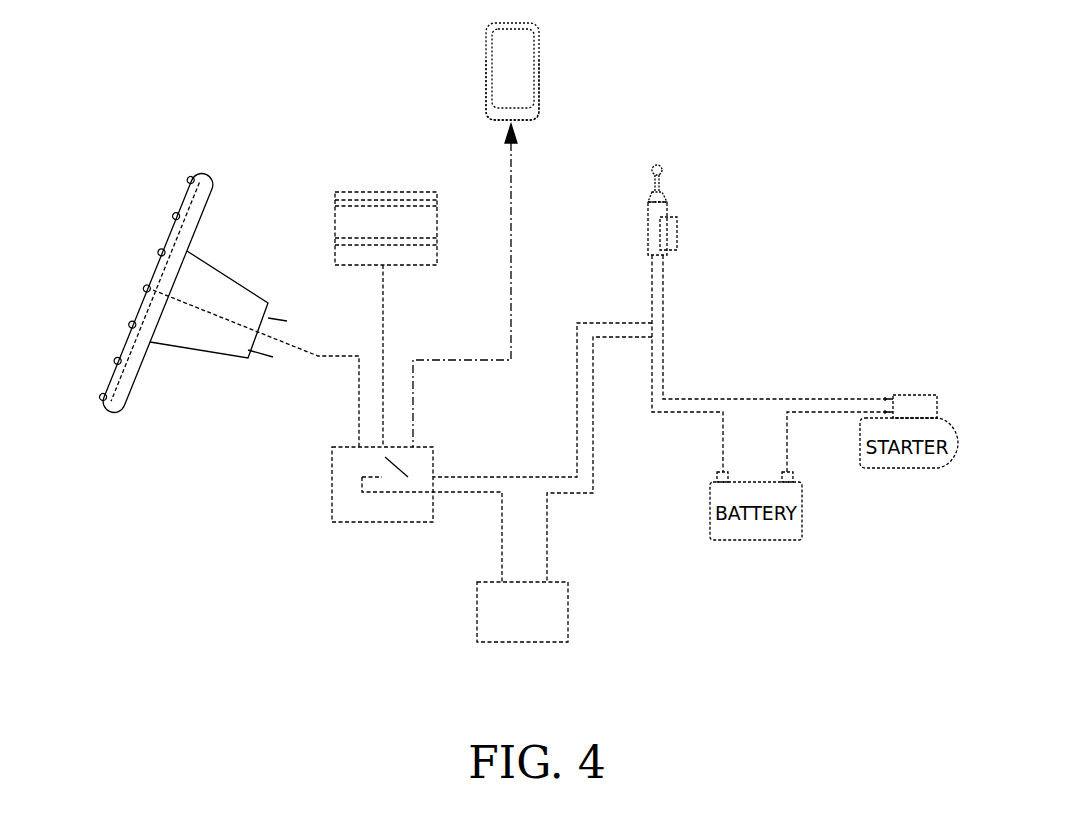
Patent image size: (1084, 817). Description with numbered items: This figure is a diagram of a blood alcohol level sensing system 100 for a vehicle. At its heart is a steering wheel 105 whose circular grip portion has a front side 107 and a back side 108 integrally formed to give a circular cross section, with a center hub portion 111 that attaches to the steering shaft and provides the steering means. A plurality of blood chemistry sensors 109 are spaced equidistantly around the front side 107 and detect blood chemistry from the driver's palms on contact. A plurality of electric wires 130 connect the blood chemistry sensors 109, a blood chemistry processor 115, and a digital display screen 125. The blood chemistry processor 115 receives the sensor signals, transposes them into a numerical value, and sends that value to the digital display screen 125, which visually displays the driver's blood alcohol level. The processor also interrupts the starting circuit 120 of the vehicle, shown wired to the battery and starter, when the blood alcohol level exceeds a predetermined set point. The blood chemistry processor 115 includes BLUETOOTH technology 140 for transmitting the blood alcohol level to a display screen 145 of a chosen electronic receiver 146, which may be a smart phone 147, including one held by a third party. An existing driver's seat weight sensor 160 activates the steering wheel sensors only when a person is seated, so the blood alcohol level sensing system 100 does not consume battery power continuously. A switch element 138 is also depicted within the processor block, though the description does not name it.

The blood alcohol level sensing system 100 is at (266, 77).
The steering wheel 105 is at (205, 173).
The front side 107 is at (159, 266).
The back side 108 is at (141, 383).
The blood chemistry sensors 109 is at (176, 215).
The center hub portion 111 is at (208, 257).
The blood chemistry processor 115 is at (338, 522).
The starting circuit 120 is at (622, 323).
The digital display screen 125 is at (407, 192).
The electric wires 130 is at (138, 343).
The relay switch 138 is at (393, 492).
The BLUETOOTH technology 140 is at (512, 180).
The display screen 145 is at (520, 45).
The electronic receiver 146 is at (540, 68).
The smart phone 147 is at (540, 95).
The seat weight sensor 160 is at (570, 618).